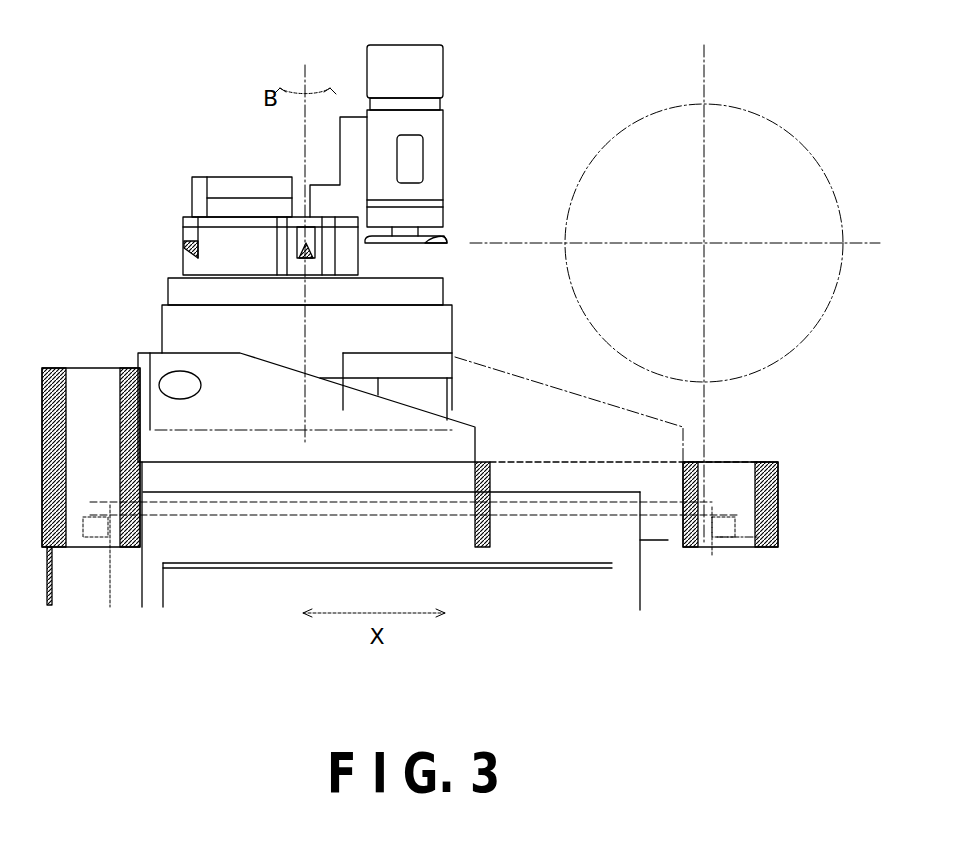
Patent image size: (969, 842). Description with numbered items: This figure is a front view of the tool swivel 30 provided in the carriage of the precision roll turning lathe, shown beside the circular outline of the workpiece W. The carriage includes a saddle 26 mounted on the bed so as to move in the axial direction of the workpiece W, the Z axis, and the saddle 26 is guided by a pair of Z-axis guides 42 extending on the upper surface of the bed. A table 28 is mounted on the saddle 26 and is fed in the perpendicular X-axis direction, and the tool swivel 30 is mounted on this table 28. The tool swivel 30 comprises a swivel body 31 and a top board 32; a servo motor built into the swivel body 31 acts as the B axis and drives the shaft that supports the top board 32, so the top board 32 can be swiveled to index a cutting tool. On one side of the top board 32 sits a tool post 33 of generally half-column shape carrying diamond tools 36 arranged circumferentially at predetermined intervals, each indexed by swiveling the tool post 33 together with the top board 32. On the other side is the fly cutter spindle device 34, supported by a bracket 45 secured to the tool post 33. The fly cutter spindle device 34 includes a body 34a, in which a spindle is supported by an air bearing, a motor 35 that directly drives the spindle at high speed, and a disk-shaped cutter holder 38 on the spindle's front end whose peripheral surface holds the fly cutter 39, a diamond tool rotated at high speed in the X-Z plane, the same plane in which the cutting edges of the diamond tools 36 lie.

The saddle 26 is at (608, 600).
The table 28 is at (245, 474).
The tool swivel 30 is at (333, 349).
The swivel body 31 is at (425, 324).
The top board 32 is at (170, 292).
The tool post 33 is at (245, 245).
The fly cutter spindle device 34 is at (461, 168).
The body 34a is at (432, 153).
The motor 35 is at (432, 72).
The diamond tools 36 is at (182, 247).
The cutter holder 38 is at (410, 247).
The fly cutter 39 is at (443, 241).
The Z-axis guides 42 is at (355, 128).
The bracket 45 is at (218, 186).
The workpiece W is at (752, 106).